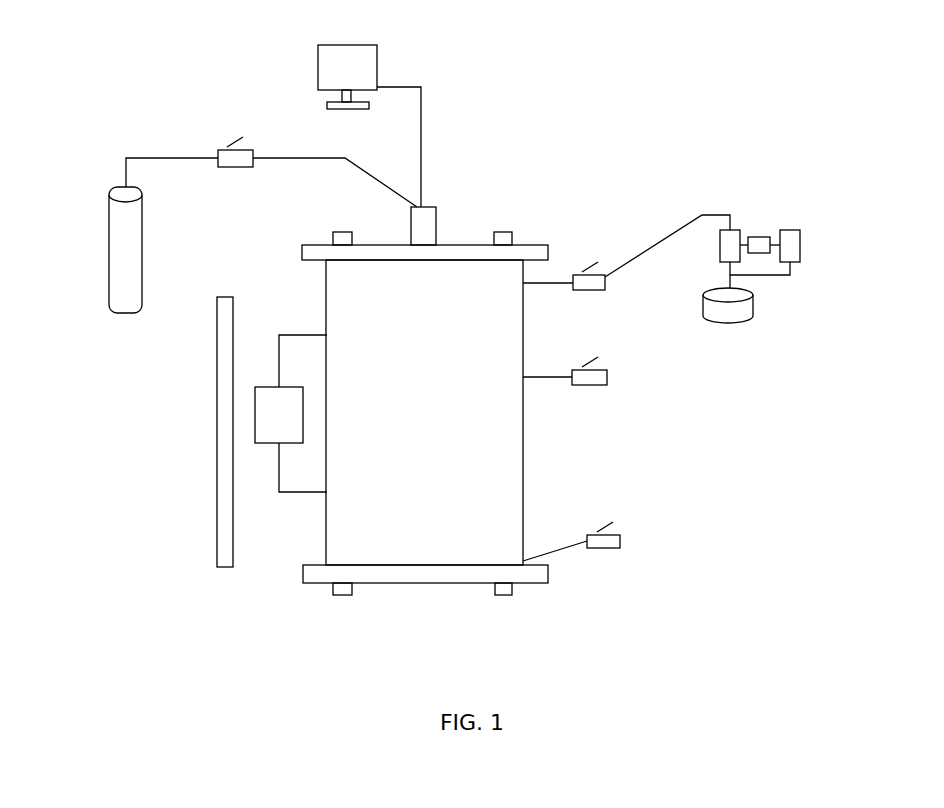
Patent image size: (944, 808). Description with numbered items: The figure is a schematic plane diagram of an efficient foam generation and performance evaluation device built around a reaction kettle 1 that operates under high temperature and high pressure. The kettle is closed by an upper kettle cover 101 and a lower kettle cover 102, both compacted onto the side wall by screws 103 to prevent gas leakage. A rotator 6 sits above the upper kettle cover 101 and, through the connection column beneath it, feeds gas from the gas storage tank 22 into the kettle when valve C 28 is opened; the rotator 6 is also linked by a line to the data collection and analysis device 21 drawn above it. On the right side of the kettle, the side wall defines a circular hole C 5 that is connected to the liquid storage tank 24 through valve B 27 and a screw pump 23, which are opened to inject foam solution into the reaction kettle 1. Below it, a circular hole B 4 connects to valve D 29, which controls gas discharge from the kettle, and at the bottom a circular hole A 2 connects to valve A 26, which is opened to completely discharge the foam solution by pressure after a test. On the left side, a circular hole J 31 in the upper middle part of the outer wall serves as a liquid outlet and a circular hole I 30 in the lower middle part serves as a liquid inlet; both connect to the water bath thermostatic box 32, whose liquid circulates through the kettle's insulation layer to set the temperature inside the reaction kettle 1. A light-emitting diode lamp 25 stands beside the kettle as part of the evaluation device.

The reaction kettle 1 is at (497, 490).
The circular hole A 2 is at (523, 560).
The circular hole B 4 is at (523, 377).
The circular hole C 5 is at (523, 282).
The rotator 6 is at (436, 220).
The data collection and analysis device 21 is at (362, 55).
The gas storage tank 22 is at (142, 228).
The screw pump 23 is at (757, 238).
The liquid storage tank 24 is at (752, 307).
The light-emitting diode (LED) lamp 25 is at (220, 417).
The valve A 26 is at (603, 548).
The valve B 27 is at (590, 290).
The valve C 28 is at (225, 150).
The valve D 29 is at (590, 385).
The circular hole I 30 is at (326, 494).
The circular hole J 31 is at (325, 333).
The water bath thermostatic box 32 is at (262, 422).
The upper kettle cover 101 is at (513, 252).
The lower kettle cover 102 is at (480, 573).
The screw 103 is at (340, 587).